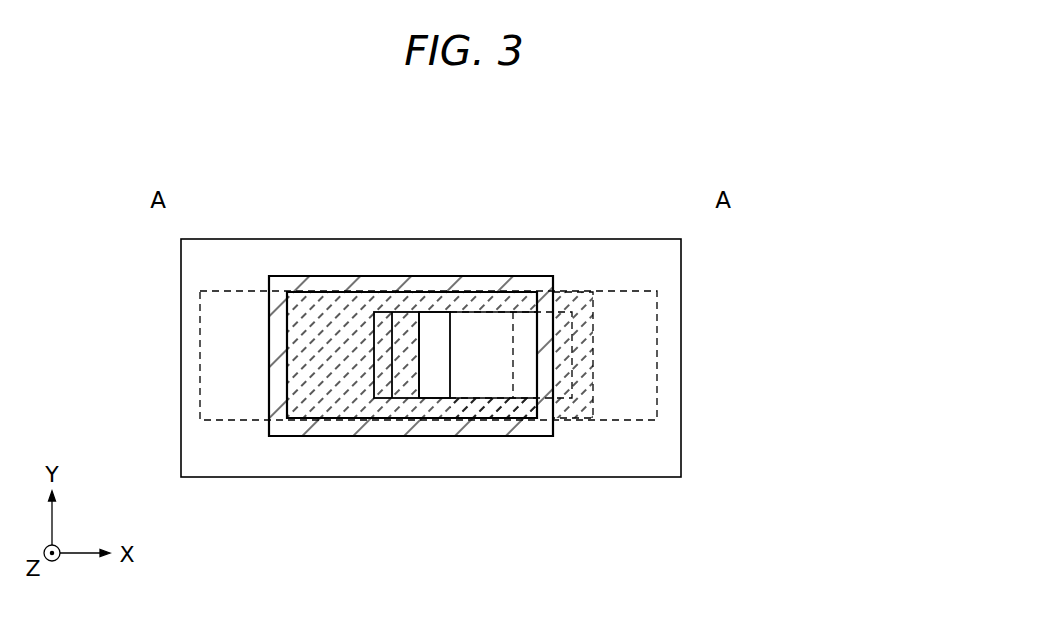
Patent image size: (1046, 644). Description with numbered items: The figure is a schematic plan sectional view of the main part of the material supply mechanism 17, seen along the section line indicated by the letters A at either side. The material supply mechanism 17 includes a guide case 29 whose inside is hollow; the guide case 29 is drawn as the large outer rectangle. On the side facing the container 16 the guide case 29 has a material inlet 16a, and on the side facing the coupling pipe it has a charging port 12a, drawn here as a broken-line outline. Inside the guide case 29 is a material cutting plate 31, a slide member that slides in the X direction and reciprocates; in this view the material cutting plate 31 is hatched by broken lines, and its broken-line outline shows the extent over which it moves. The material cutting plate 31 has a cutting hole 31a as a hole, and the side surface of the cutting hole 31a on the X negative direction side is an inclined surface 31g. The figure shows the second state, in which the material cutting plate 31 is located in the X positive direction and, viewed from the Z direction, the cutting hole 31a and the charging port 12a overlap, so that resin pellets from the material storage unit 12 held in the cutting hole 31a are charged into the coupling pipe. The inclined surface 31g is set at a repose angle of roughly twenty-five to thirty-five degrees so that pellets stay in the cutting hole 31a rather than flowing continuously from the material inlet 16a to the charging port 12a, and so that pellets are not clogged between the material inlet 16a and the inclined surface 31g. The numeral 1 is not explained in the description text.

The material supply mechanism 17 is at (496, 312).
The material storage unit 12 is at (496, 312).
The ultrasonic sensor 1 is at (710, 143).
The guide case 29 is at (652, 248).
The material cutting plate 31 is at (341, 305).
The container 16 is at (530, 282).
The material inlet 16a is at (437, 322).
The inclined surface 31g is at (405, 393).
The cutting hole 31a is at (473, 397).
The charging port 12a is at (518, 373).